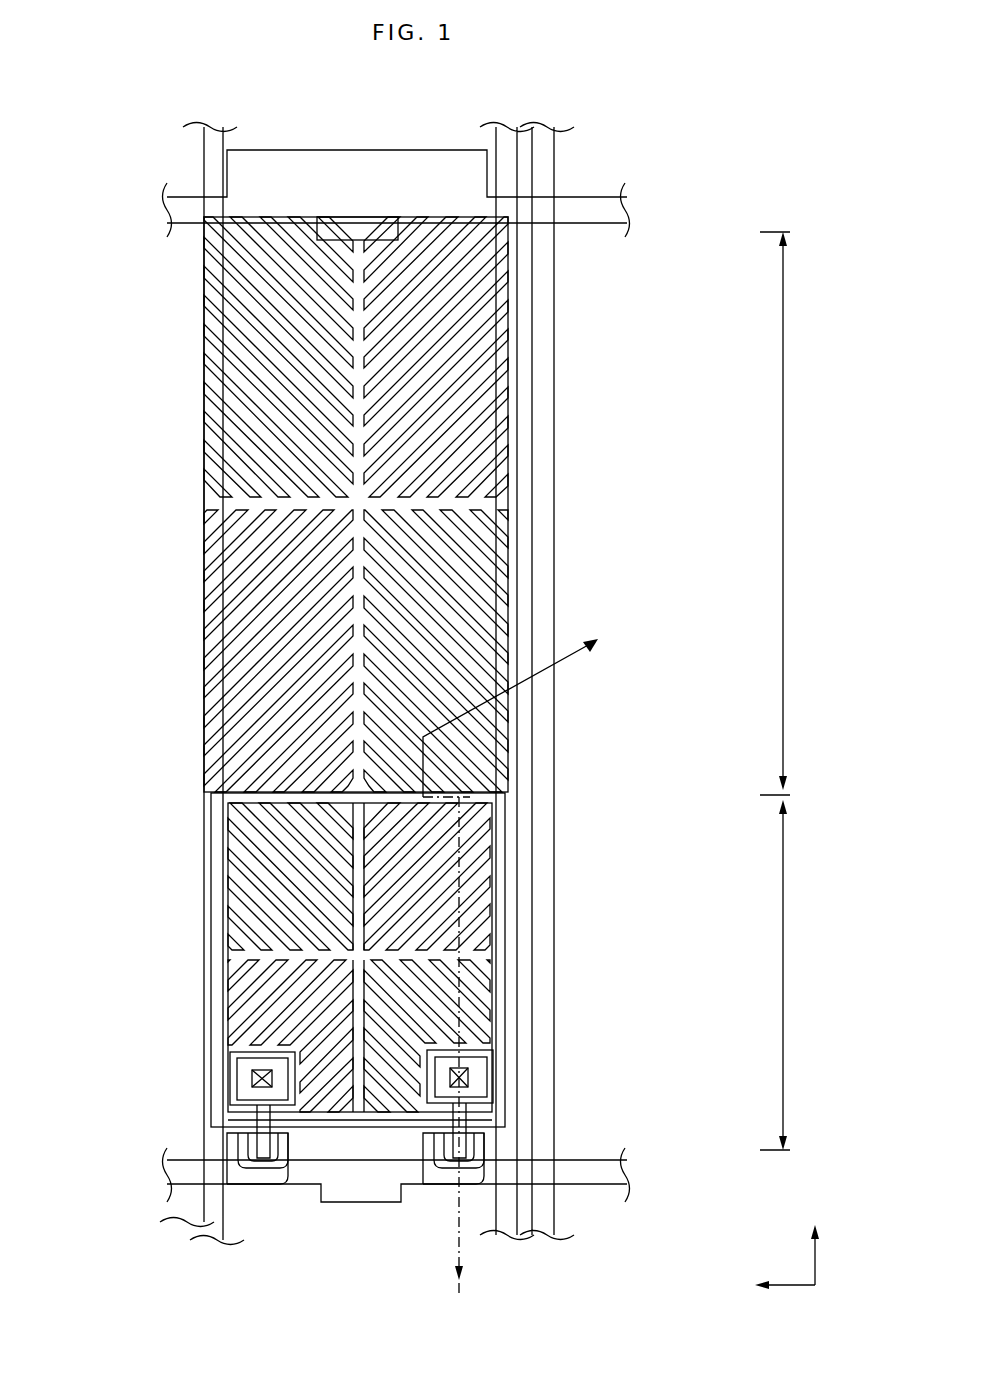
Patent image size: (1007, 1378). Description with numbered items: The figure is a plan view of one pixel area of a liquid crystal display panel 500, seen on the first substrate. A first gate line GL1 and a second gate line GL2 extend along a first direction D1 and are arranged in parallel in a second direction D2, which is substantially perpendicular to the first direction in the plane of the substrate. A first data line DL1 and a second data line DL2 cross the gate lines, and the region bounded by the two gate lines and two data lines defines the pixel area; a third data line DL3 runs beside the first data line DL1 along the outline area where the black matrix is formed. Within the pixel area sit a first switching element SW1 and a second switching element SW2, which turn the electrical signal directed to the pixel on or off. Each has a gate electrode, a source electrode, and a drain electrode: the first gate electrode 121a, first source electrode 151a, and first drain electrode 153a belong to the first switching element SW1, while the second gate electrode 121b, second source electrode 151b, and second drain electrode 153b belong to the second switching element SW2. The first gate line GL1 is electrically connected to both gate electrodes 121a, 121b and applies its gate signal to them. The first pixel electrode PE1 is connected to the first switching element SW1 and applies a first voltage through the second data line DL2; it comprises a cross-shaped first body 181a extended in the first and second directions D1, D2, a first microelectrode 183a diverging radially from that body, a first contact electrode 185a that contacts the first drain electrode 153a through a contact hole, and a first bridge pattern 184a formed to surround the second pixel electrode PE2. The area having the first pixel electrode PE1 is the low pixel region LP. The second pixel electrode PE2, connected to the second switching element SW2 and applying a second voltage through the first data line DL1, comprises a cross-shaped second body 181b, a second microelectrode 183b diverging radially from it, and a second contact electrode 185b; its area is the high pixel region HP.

The LCD panel 500 is at (370, 89).
The first gate line GL1 is at (612, 1173).
The second gate line GL2 is at (612, 211).
The first data line DL1 is at (503, 1237).
The second data line DL2 is at (210, 1222).
The third data line DL3 is at (546, 1237).
The first pixel electrode PE1 is at (476, 672).
The first body 181a is at (360, 362).
The first microelectrode 183a is at (507, 308).
The first bridge pattern 184a is at (507, 976).
The first contact electrode 185a is at (492, 1075).
The second pixel electrode PE2 is at (273, 957).
The second body 181b is at (232, 955).
The second microelectrode 183b is at (230, 908).
The second contact electrode 185b is at (232, 1062).
The first switching element SW1 is at (590, 1127).
The first gate electrode 121a is at (485, 1140).
The first source electrode 151a is at (484, 1162).
The first drain electrode 153a is at (470, 1118).
The second switching element SW2 is at (172, 1127).
The second gate electrode 121b is at (240, 1148).
The second source electrode 151b is at (238, 1160).
The second drain electrode 153b is at (258, 1112).
The low pixel region LP is at (788, 513).
The high pixel region HP is at (790, 975).
The first direction D1 is at (765, 1285).
The second direction D2 is at (818, 1237).